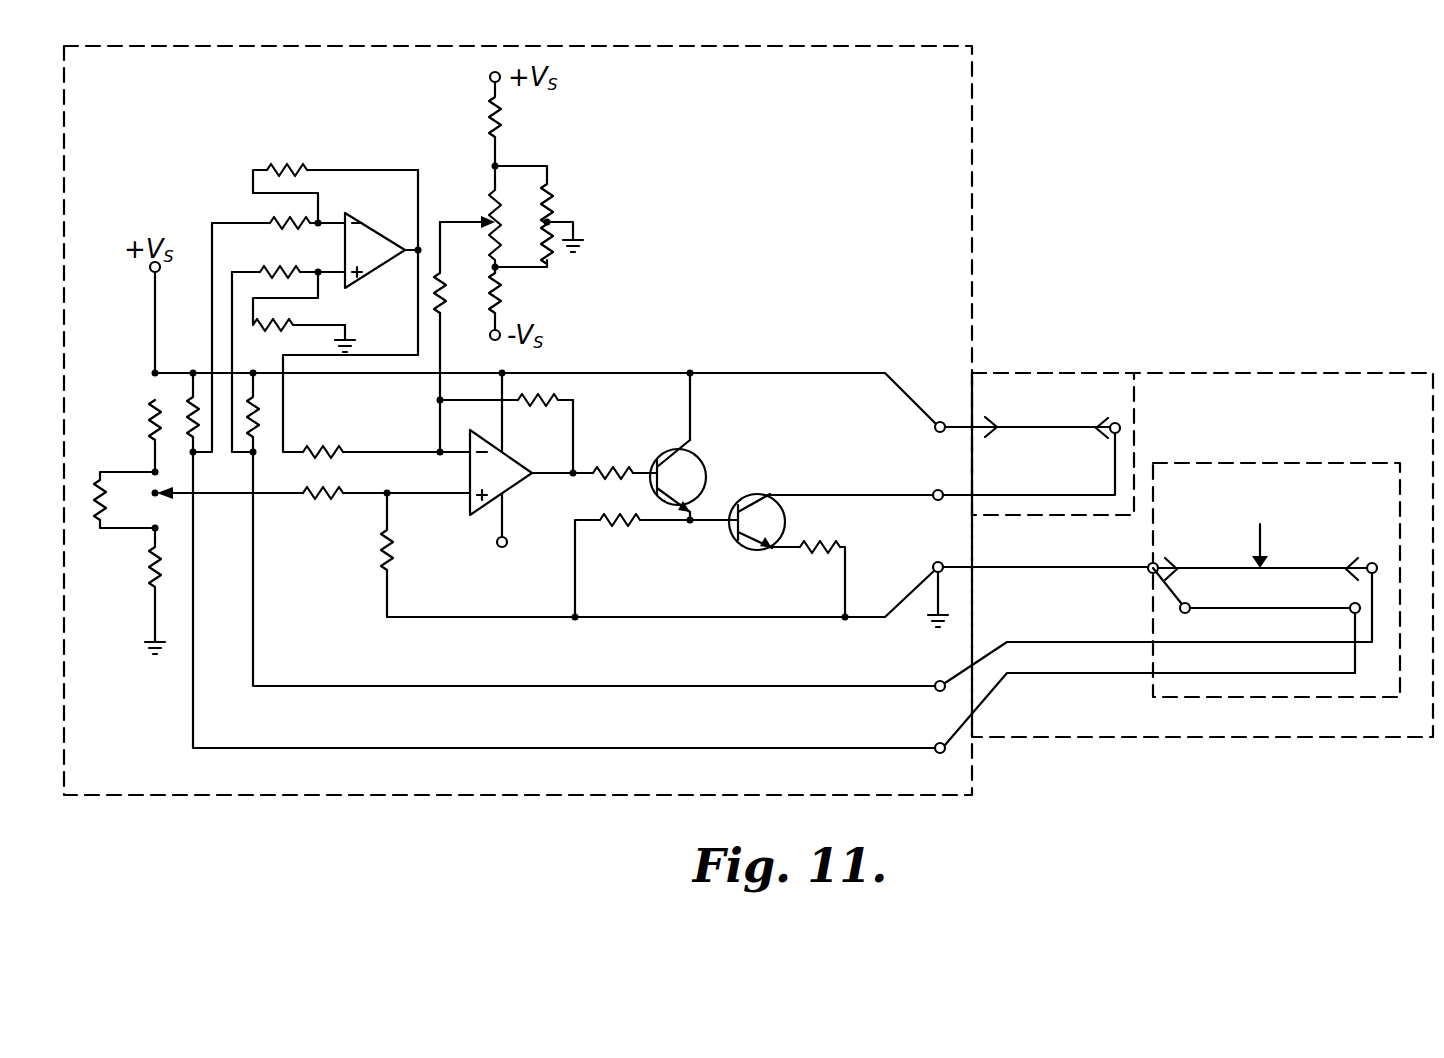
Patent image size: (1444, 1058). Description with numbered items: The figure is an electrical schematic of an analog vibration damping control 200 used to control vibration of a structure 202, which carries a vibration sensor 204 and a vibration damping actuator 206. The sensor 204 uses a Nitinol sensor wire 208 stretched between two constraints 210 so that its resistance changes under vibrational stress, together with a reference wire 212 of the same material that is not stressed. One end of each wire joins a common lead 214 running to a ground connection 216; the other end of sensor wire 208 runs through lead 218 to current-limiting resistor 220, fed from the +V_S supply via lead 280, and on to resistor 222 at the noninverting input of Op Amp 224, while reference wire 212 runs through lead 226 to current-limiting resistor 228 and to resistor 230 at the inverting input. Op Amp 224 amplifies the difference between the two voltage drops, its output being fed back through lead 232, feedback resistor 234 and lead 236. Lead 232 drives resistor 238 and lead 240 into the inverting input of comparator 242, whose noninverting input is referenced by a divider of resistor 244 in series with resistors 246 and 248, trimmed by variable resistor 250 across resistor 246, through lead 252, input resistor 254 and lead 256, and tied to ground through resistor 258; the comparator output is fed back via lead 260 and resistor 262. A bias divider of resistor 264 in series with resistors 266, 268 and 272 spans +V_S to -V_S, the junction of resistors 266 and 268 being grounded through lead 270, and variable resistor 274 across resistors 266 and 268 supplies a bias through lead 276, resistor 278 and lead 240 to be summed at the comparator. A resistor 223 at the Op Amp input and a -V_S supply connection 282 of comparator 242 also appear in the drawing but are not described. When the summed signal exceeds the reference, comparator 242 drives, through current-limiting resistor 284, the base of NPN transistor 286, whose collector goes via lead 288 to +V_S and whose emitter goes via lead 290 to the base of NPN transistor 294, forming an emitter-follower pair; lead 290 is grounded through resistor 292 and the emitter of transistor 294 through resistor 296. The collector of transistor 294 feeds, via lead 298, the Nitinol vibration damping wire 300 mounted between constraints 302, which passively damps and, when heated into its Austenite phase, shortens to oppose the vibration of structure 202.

The analog vibration damping control 200 is at (1015, 176).
The structure 202 is at (1162, 752).
The vibration sensor 204 is at (1270, 463).
The vibration damping actuator 206 is at (1140, 417).
The sensor wire 208 is at (1286, 568).
The constraints 210 is at (1170, 568).
The reference wire 212 is at (1236, 610).
The lead 214 is at (478, 620).
The ground connection 216 is at (352, 338).
The lead 218 is at (234, 314).
The resistor 220 is at (257, 395).
The resistor 222 is at (280, 272).
The resistor 223 is at (300, 323).
The operational amplifier 224 is at (376, 240).
The lead 226 is at (980, 720).
The resistor 228 is at (190, 395).
The resistor 230 is at (278, 223).
The lead 232 is at (370, 170).
The feedback resistor 234 is at (290, 170).
The lead 236 is at (268, 170).
The resistor 238 is at (330, 452).
The lead 240 is at (402, 455).
The comparator 242 is at (537, 448).
The resistor 244 is at (152, 412).
The resistor 246 is at (96, 484).
The resistor 248 is at (152, 594).
The variable resistor 250 is at (150, 500).
The lead 252 is at (228, 497).
The input resistor 254 is at (318, 497).
The lead 256 is at (436, 497).
The resistor 258 is at (380, 560).
The lead 260 is at (576, 432).
The resistor 262 is at (548, 394).
The resistor 264 is at (505, 126).
The resistor 266 is at (552, 195).
The resistor 268 is at (552, 250).
The lead 270 is at (578, 220).
The resistor 272 is at (500, 292).
The variable resistor 274 is at (487, 215).
The lead 276 is at (443, 250).
The resistor 278 is at (443, 315).
The lead 280 is at (610, 372).
The negative supply terminal 282 is at (496, 547).
The current limiting resistor 284 is at (598, 480).
The NPN transistor 286 is at (700, 462).
The lead 288 is at (694, 404).
The lead 290 is at (666, 523).
The resistor 292 is at (610, 523).
The NPN transistor 294 is at (762, 492).
The resistor 296 is at (812, 555).
The lead 298 is at (848, 498).
The vibration damping wire 300 is at (1030, 427).
The constraints 302 is at (996, 434).